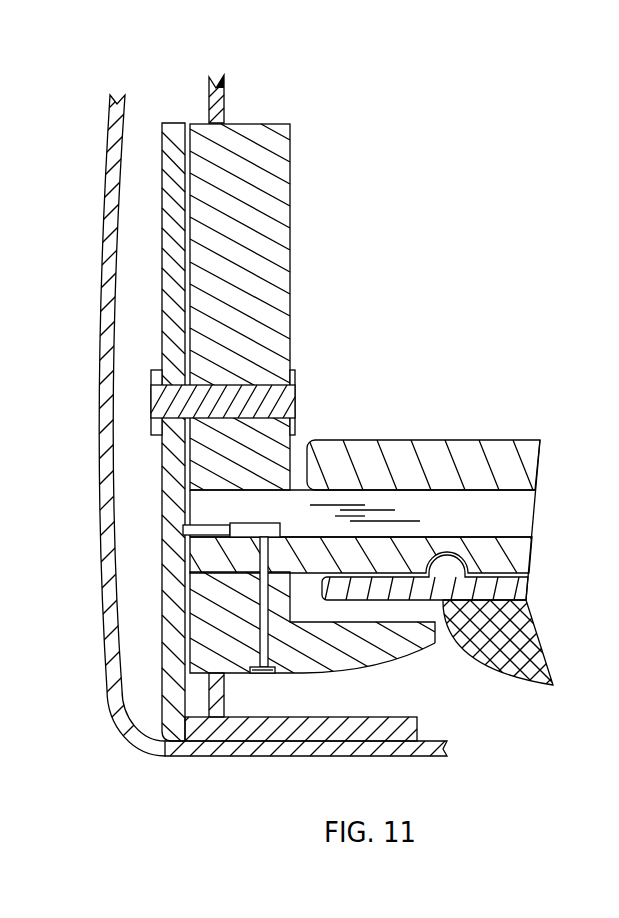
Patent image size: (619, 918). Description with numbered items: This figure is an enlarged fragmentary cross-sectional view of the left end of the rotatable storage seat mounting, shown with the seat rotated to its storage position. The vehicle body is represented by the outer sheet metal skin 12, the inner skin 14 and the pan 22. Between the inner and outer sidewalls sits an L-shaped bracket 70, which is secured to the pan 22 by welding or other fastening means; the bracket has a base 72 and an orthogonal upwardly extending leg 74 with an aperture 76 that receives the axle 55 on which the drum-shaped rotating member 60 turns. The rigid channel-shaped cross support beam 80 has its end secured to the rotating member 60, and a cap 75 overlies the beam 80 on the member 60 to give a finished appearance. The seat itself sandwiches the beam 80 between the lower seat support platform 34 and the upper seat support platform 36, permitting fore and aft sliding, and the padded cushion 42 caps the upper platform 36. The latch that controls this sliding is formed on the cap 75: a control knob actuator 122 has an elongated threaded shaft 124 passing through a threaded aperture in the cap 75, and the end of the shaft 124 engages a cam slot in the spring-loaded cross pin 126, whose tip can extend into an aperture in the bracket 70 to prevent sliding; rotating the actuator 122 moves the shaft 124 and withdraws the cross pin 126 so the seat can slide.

The outer sheet metal skin 12 is at (104, 236).
The inner skin 14 is at (221, 100).
The pan 22 is at (400, 757).
The lower seat support platform 34 is at (395, 434).
The upper seat support platform 36 is at (536, 588).
The padded cushion 42 is at (503, 678).
The axle 55 is at (280, 401).
The rotating member 60 is at (298, 271).
The L-shaped bracket 70 is at (172, 118).
The base 72 is at (310, 717).
The upwardly extending leg 74 is at (177, 476).
The cap 75 is at (289, 676).
The aperture 76 is at (393, 662).
The cross support beam 80 is at (544, 514).
The control knob actuator 122 is at (266, 675).
The elongated threaded shaft 124 is at (262, 605).
The cross pin 126 is at (235, 536).